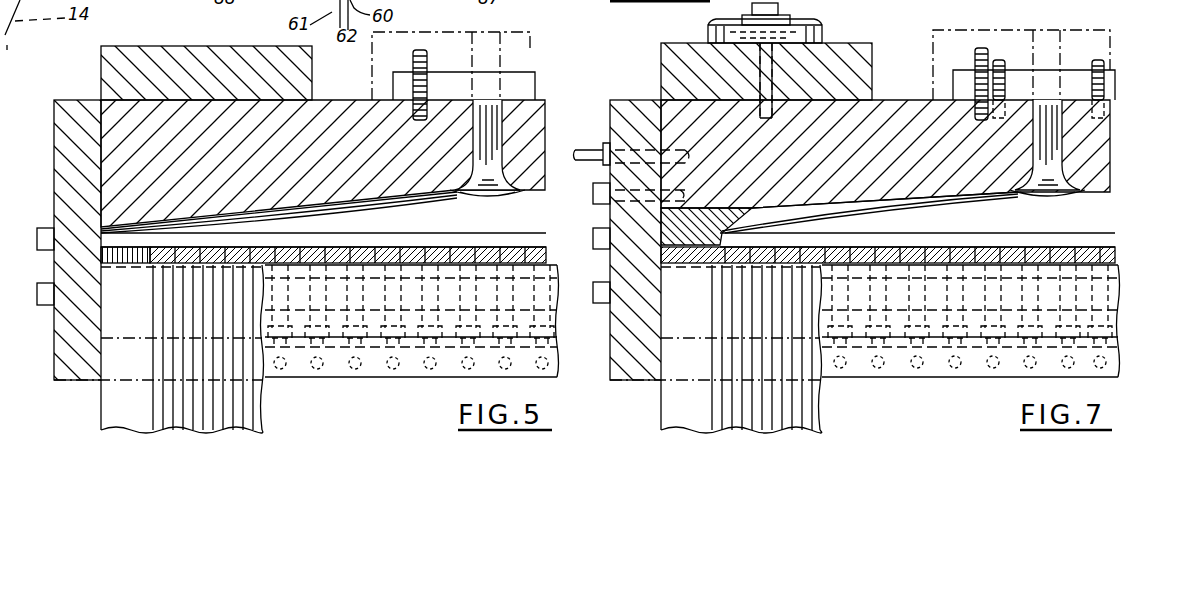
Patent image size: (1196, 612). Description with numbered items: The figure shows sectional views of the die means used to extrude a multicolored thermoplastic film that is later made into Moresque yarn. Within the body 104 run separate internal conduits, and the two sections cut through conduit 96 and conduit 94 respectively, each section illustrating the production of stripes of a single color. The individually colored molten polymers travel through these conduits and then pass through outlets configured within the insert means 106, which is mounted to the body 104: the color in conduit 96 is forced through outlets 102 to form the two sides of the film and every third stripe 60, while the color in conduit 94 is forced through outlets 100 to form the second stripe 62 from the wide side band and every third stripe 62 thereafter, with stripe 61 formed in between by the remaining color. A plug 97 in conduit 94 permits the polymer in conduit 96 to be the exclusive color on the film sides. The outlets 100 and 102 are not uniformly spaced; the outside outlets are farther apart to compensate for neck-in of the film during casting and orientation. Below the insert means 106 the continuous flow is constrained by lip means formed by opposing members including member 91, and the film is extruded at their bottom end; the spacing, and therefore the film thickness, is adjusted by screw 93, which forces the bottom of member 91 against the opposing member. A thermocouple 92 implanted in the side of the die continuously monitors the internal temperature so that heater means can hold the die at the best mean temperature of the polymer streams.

In FIG. 5, the stripe 60 is at (110, 409).
In FIG. 7, the stripe 60 is at (672, 406).
In FIG. 5, the stripe 61 is at (156, 420).
In FIG. 7, the stripe 61 is at (715, 420).
In FIG. 5, the stripe 62 is at (168, 420).
In FIG. 7, the stripe 62 is at (723, 420).
In FIG. 5, the opposing member 91 is at (448, 372).
In FIG. 7, the opposing member 91 is at (1010, 370).
In FIG. 7, the thermocouple 92 is at (603, 143).
In FIG. 5, the screw 93 is at (432, 371).
In FIG. 7, the screw 93 is at (953, 371).
In FIG. 7, the conduit 94 is at (888, 125).
In FIG. 5, the conduit 96 is at (323, 129).
In FIG. 7, the plug 97 is at (665, 228).
In FIG. 7, the outlet 100 is at (1012, 233).
In FIG. 5, the outlet 102 is at (437, 233).
In FIG. 5, the body 104 is at (346, 112).
In FIG. 7, the body 104 is at (906, 114).
In FIG. 5, the insert means 106 is at (490, 235).
In FIG. 7, the insert means 106 is at (1095, 237).